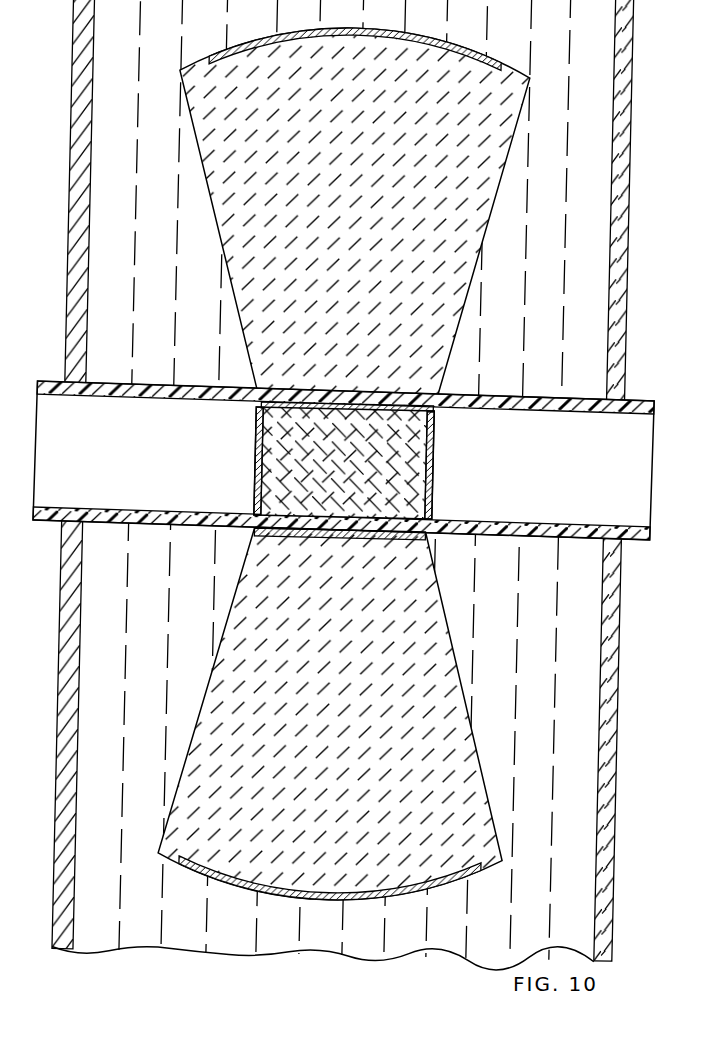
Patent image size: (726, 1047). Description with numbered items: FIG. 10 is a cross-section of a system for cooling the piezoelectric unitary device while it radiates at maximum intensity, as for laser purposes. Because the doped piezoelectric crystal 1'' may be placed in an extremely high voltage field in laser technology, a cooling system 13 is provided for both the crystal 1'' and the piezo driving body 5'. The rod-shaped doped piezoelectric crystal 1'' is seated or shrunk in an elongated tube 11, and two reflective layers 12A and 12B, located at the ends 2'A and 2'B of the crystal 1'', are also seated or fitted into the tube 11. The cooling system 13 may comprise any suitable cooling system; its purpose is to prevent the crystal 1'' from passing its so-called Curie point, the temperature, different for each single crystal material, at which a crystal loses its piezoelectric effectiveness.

The cooling system 13 is at (565, 25).
The piezo driving body 5' is at (344, 464).
The elongated tube 11 is at (611, 404).
The doped piezoelectric crystal 1'' is at (343, 471).
The reflective layer 12A is at (254, 432).
The end of the rod-shaped piezoelectric crystal 2'A is at (225, 460).
The reflective layer 12B is at (435, 445).
The end of the rod-shaped piezoelectric crystal 2'B is at (464, 466).